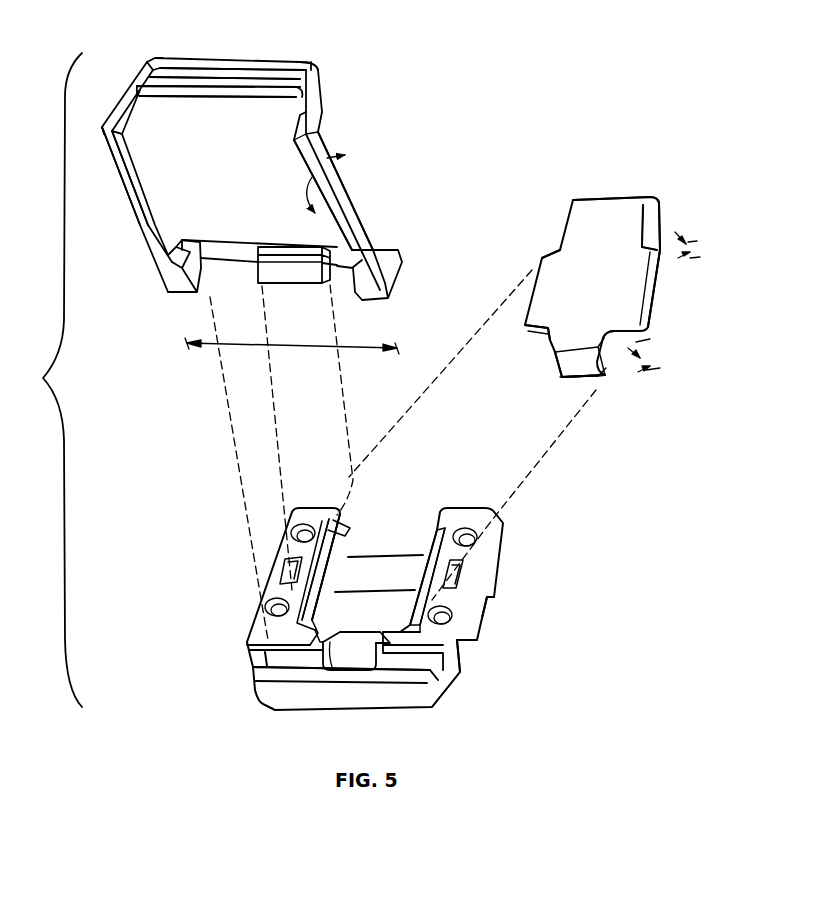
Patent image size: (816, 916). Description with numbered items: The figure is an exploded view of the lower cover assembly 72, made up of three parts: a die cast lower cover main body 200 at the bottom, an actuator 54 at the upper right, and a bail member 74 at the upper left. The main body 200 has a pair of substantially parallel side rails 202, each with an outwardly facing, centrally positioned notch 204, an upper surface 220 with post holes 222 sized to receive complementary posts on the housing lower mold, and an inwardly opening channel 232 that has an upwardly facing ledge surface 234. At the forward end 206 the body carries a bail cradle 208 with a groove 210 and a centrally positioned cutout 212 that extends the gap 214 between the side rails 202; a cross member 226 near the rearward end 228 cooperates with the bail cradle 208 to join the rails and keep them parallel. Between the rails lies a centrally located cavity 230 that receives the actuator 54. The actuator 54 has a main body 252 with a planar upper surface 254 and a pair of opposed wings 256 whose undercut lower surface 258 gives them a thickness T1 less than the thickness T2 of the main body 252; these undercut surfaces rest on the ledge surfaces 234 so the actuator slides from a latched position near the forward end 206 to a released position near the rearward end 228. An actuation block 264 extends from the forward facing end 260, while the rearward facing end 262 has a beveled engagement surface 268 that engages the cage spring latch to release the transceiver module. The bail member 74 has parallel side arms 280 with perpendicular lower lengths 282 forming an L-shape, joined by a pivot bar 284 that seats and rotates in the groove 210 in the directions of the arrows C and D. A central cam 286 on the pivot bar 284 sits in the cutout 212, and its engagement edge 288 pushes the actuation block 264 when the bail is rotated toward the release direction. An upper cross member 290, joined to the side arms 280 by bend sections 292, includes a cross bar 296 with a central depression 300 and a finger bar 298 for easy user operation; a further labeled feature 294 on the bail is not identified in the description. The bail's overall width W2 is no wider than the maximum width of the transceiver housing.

The lower cover assembly 72 is at (50, 380).
The bail member 74 is at (273, 181).
The actuator 54 is at (601, 257).
The main body 200 is at (388, 606).
The side rails 202 is at (388, 618).
The notch 204 is at (487, 595).
The forward end 206 is at (265, 724).
The bail cradle 208 is at (445, 700).
The groove 210 is at (440, 665).
The cutout 212 is at (396, 700).
The gap 214 is at (333, 670).
The upper surface 220 is at (297, 512).
The post holes 222 is at (270, 602).
The cross member 226 is at (373, 599).
The rearward end 228 is at (428, 513).
The cavity 230 is at (356, 650).
The channel 232 is at (348, 532).
The ledge surface 234 is at (305, 600).
The main body 252 is at (612, 206).
The planar upper surface 254 is at (593, 276).
The wings 256 is at (652, 318).
The lower surface 258 is at (648, 334).
The forward facing end 260 is at (535, 373).
The rearward facing end 262 is at (592, 198).
The actuation block 264 is at (586, 380).
The beveled engagement surface 268 is at (662, 222).
The side arms 280 is at (157, 215).
The lower length 282 is at (203, 292).
The pivot bar 284 is at (238, 246).
The cam 286 is at (310, 287).
The engagement edge 288 is at (296, 286).
The upper cross member 290 is at (202, 52).
The bend sections 292 is at (125, 136).
The clip side 294 is at (137, 76).
The cross bar 296 is at (288, 100).
The finger bar 298 is at (284, 64).
The depression 300 is at (216, 100).
The overall width W2 is at (284, 347).
The thickness T1 is at (709, 240).
The thickness T2 is at (652, 368).